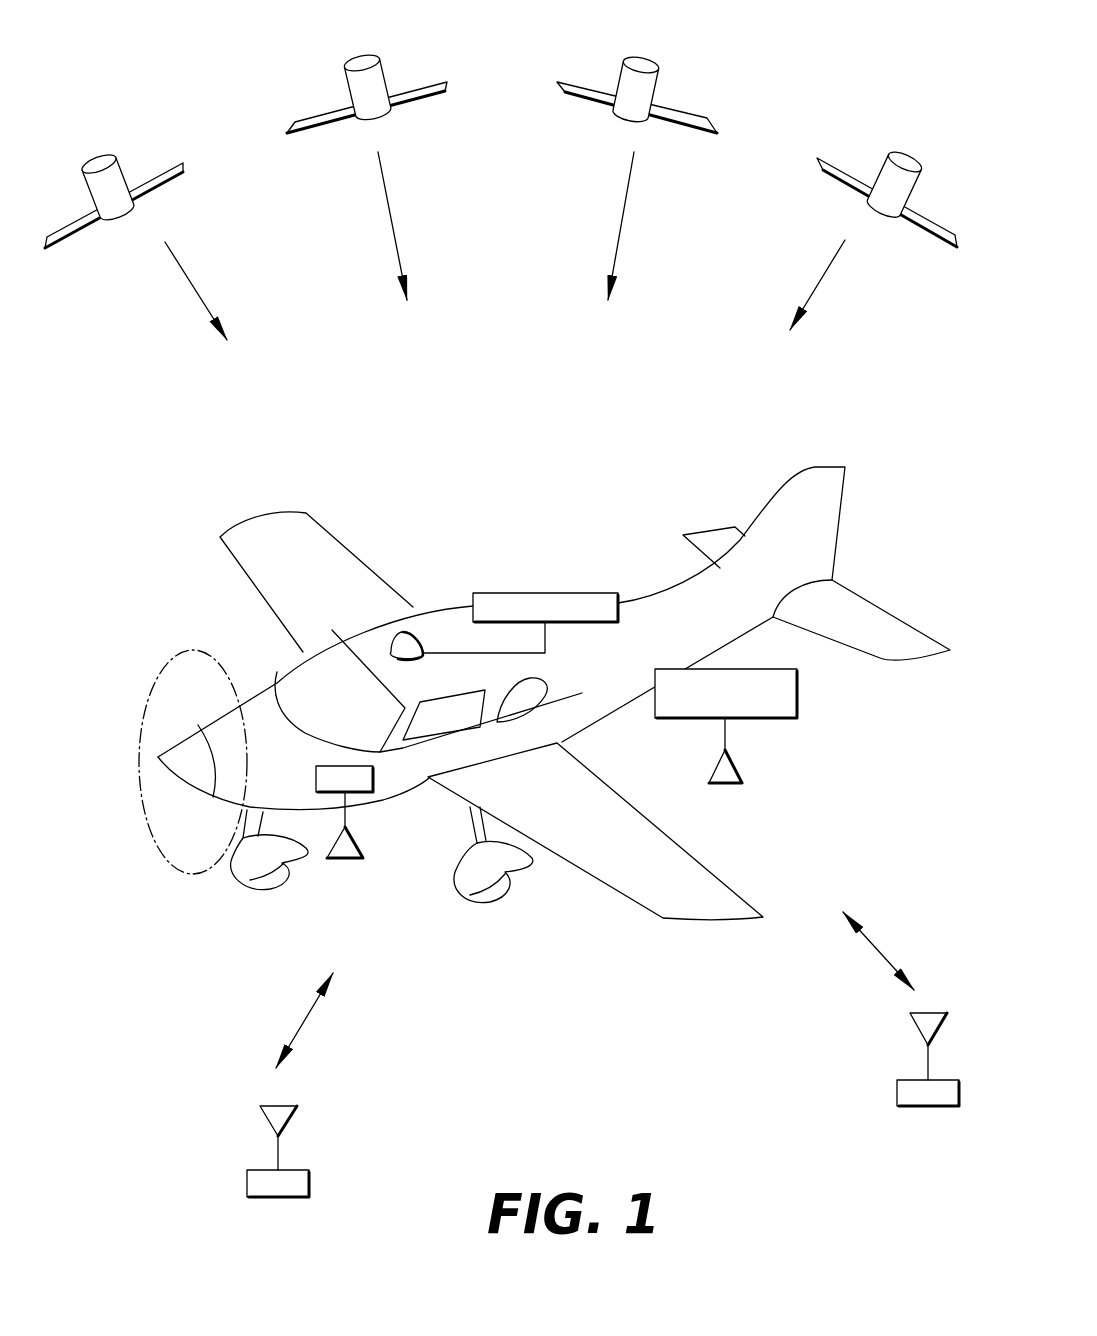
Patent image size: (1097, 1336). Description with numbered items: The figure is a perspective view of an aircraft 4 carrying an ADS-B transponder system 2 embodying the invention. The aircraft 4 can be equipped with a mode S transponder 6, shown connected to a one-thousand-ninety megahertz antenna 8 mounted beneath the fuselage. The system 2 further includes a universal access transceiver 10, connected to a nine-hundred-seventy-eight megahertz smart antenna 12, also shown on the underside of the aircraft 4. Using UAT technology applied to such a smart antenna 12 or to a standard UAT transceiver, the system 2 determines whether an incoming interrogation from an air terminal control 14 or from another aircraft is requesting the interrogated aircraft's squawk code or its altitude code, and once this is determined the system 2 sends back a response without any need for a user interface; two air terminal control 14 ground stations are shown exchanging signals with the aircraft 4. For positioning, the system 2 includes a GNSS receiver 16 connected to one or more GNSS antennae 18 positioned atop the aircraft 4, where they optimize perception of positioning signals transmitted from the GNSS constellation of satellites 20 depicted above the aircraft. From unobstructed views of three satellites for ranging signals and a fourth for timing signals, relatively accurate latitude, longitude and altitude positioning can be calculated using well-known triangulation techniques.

The ADS-B transponder system 2 is at (803, 90).
The aircraft 4 is at (125, 523).
The mode S transponder 6 is at (797, 676).
The 1090 MHz antenna 8 is at (709, 782).
The universal access transceiver 10 is at (316, 770).
The 978 MHz smart antenna 12 is at (366, 857).
The air terminal control 14 is at (309, 1177).
The GNSS receiver 16 is at (480, 592).
The GNSS antenna 18 is at (417, 662).
The GNSS constellation of satellites 20 is at (297, 120).